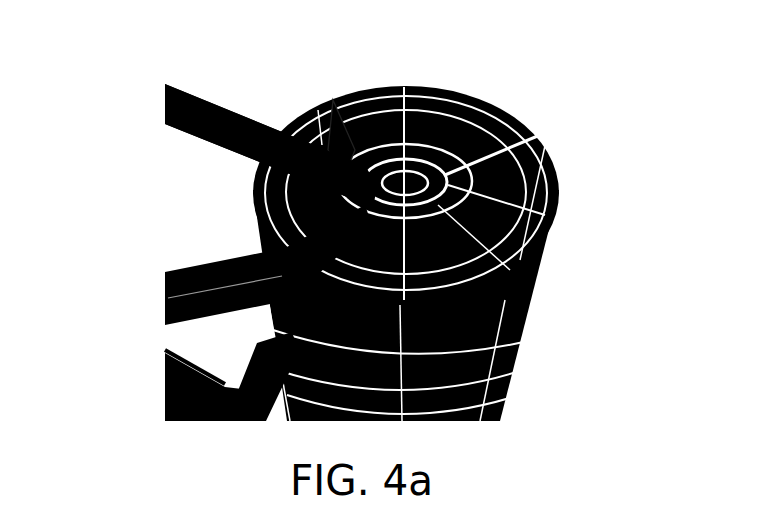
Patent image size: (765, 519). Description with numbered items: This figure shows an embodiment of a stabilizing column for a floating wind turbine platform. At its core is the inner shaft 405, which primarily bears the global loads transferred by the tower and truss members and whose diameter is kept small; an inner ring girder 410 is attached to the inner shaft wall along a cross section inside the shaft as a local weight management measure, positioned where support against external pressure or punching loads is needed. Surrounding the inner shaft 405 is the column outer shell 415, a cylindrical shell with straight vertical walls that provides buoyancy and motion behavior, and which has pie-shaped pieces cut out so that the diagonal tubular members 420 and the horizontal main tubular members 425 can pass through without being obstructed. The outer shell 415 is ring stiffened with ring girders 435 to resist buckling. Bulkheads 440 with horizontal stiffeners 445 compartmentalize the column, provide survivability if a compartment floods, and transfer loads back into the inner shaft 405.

The inner shaft 405 is at (478, 100).
The inner ring girder 410 is at (547, 158).
The column outer shell 415 is at (295, 120).
The diagonal tubular members 420 is at (262, 348).
The horizontal main tubular members 425 is at (227, 257).
The ring girders 435 is at (560, 197).
The bulkheads 440 is at (326, 103).
The horizontal stiffeners 445 is at (543, 276).